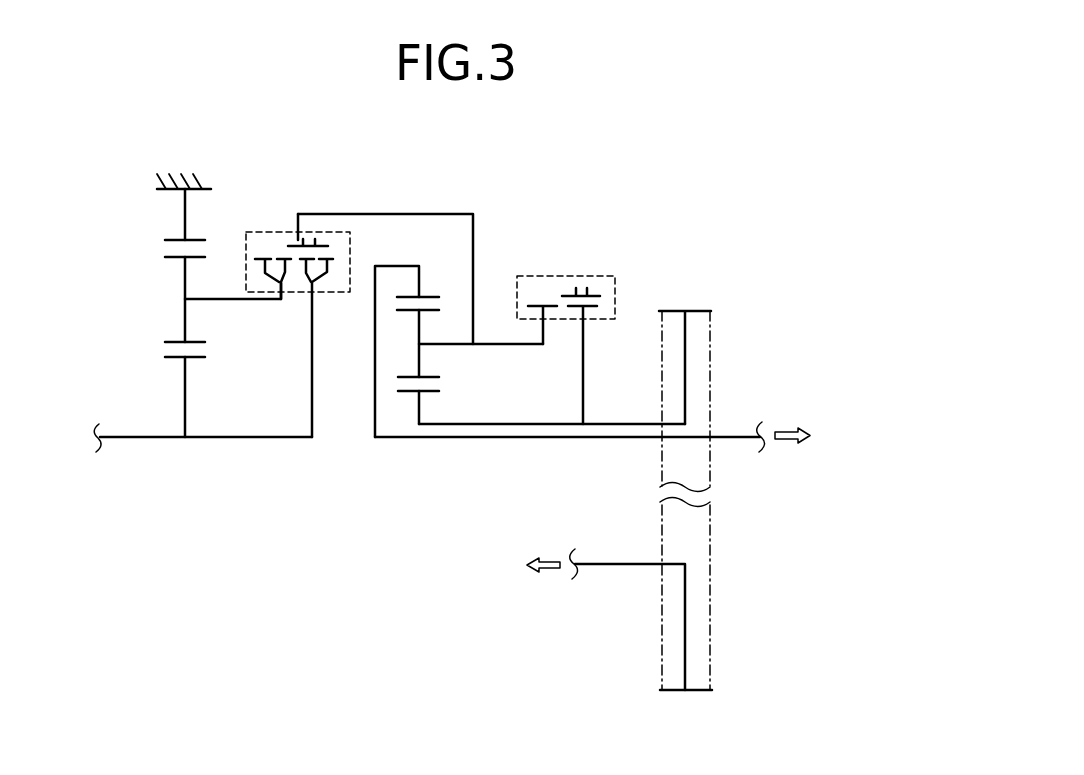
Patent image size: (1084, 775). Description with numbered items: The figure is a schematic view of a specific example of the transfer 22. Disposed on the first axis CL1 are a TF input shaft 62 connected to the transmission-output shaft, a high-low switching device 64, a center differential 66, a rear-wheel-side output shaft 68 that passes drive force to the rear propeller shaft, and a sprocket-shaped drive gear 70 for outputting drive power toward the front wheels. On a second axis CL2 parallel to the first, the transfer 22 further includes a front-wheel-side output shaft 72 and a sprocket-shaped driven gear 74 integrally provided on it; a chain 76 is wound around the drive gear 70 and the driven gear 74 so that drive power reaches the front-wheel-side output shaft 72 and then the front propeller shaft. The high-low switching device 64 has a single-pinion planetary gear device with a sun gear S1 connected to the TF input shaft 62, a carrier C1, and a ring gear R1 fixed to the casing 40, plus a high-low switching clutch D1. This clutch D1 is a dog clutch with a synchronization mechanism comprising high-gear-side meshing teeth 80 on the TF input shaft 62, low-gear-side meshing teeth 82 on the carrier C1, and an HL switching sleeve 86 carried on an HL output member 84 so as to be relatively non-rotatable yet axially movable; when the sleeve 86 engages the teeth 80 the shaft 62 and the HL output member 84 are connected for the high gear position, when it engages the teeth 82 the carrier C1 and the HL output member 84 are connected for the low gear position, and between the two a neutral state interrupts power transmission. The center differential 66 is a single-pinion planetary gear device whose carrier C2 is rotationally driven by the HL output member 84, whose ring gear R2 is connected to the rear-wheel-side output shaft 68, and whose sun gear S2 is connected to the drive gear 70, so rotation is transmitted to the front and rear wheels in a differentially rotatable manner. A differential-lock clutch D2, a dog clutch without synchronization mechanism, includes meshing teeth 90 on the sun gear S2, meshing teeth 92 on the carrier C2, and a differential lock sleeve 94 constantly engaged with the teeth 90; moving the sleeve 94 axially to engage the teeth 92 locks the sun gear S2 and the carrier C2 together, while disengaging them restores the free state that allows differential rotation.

The transfer 22 is at (676, 202).
The casing 40 is at (184, 173).
The TF input shaft 62 is at (145, 438).
The high-low switching device 64 is at (124, 243).
The center differential 66 is at (484, 252).
The rear-wheel-side output shaft 68 is at (557, 438).
The drive gear 70 is at (696, 310).
The front-wheel-side output shaft 72 is at (613, 565).
The driven gear 74 is at (677, 694).
The chain 76 is at (713, 647).
The high-gear-side meshing teeth 80 is at (331, 260).
The low-gear-side meshing teeth 82 is at (264, 260).
The HL output member 84 is at (392, 214).
The HL switching sleeve 86 is at (317, 246).
The meshing teeth 90 is at (596, 304).
The meshing teeth 92 is at (532, 304).
The differential lock sleeve 94 is at (589, 281).
The ring gear R1 is at (168, 245).
The sun gear S1 is at (170, 353).
The carrier C1 is at (245, 300).
The high-low switching clutch D1 is at (298, 249).
The first axis CL1 is at (74, 438).
The ring gear R2 is at (436, 300).
The sun gear S2 is at (437, 383).
The carrier C2 is at (497, 345).
The differential-lock clutch D2 is at (566, 283).
The second axis CL2 is at (715, 500).